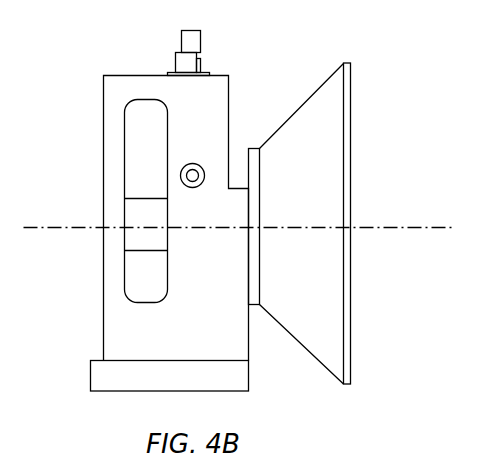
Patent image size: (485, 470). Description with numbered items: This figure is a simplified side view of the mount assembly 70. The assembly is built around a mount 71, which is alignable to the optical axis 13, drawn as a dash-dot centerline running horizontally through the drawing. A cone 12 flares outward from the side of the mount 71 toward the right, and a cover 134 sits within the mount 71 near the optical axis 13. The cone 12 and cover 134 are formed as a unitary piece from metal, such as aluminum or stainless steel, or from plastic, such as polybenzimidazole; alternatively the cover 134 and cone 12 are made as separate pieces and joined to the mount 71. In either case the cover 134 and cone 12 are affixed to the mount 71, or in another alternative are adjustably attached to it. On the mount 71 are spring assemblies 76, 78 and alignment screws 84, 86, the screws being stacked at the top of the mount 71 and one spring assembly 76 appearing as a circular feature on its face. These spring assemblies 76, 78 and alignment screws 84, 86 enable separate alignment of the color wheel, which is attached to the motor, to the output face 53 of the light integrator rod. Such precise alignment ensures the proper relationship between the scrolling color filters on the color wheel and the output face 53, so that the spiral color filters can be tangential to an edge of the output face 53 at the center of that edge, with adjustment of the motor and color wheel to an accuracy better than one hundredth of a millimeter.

The cone 12 is at (289, 117).
The optical axis 13 is at (380, 227).
The output face 53 is at (100, 221).
The mount assembly 70 is at (302, 207).
The mount 71 is at (100, 336).
The spring assembly 76 is at (192, 161).
The spring assembly 78 is at (200, 63).
The alignment screw 84 is at (199, 39).
The alignment screw 86 is at (174, 61).
The cover 134 is at (143, 197).